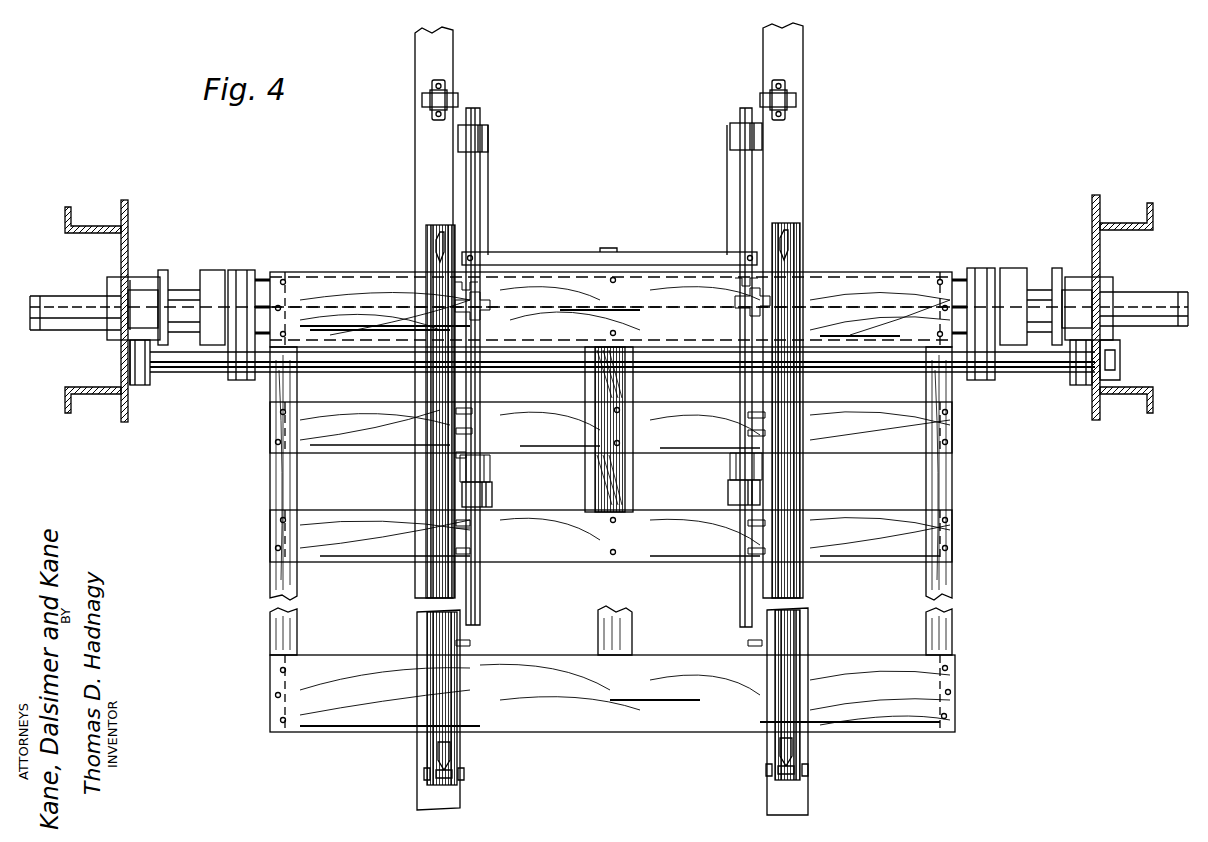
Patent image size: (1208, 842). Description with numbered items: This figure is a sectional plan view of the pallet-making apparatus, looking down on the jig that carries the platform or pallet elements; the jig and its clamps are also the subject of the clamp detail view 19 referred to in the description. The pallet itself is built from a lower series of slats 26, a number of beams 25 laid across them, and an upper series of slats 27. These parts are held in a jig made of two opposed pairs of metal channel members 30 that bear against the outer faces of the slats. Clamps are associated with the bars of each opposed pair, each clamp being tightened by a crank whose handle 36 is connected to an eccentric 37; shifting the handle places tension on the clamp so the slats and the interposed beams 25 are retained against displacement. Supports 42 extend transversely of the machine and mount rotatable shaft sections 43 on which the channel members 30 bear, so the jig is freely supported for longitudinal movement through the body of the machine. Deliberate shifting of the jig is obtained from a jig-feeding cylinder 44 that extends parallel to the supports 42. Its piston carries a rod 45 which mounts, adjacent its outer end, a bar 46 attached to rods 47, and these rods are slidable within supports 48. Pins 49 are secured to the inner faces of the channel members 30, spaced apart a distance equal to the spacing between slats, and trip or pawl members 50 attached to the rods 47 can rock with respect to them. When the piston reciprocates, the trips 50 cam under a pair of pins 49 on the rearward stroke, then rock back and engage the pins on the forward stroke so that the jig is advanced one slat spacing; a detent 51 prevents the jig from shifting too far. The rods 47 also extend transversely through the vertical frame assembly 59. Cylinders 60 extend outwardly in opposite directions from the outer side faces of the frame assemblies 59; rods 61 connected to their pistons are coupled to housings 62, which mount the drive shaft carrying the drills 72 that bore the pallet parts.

The frame section 19 is at (780, 215).
The beam 25 is at (297, 625).
The slat 26 is at (335, 510).
The slat 27 is at (333, 272).
The channel member 30 is at (430, 603).
The handle 36 is at (432, 258).
The eccentric 37 is at (440, 240).
The support 42 is at (415, 64).
The shaft section 43 is at (458, 98).
The jig-feeding cylinder 44 is at (633, 475).
The rod 45 is at (616, 238).
The bar 46 is at (656, 252).
The rod 47 is at (480, 200).
The support 48 is at (488, 138).
The pin 49 is at (486, 414).
The trip or pawl member 50 is at (460, 468).
The detent 51 is at (505, 272).
The frame assembly 59 is at (94, 226).
The cylinder 60 is at (68, 322).
The rod 61 is at (1042, 290).
The housing 62 is at (1018, 268).
The drill 72 is at (258, 280).